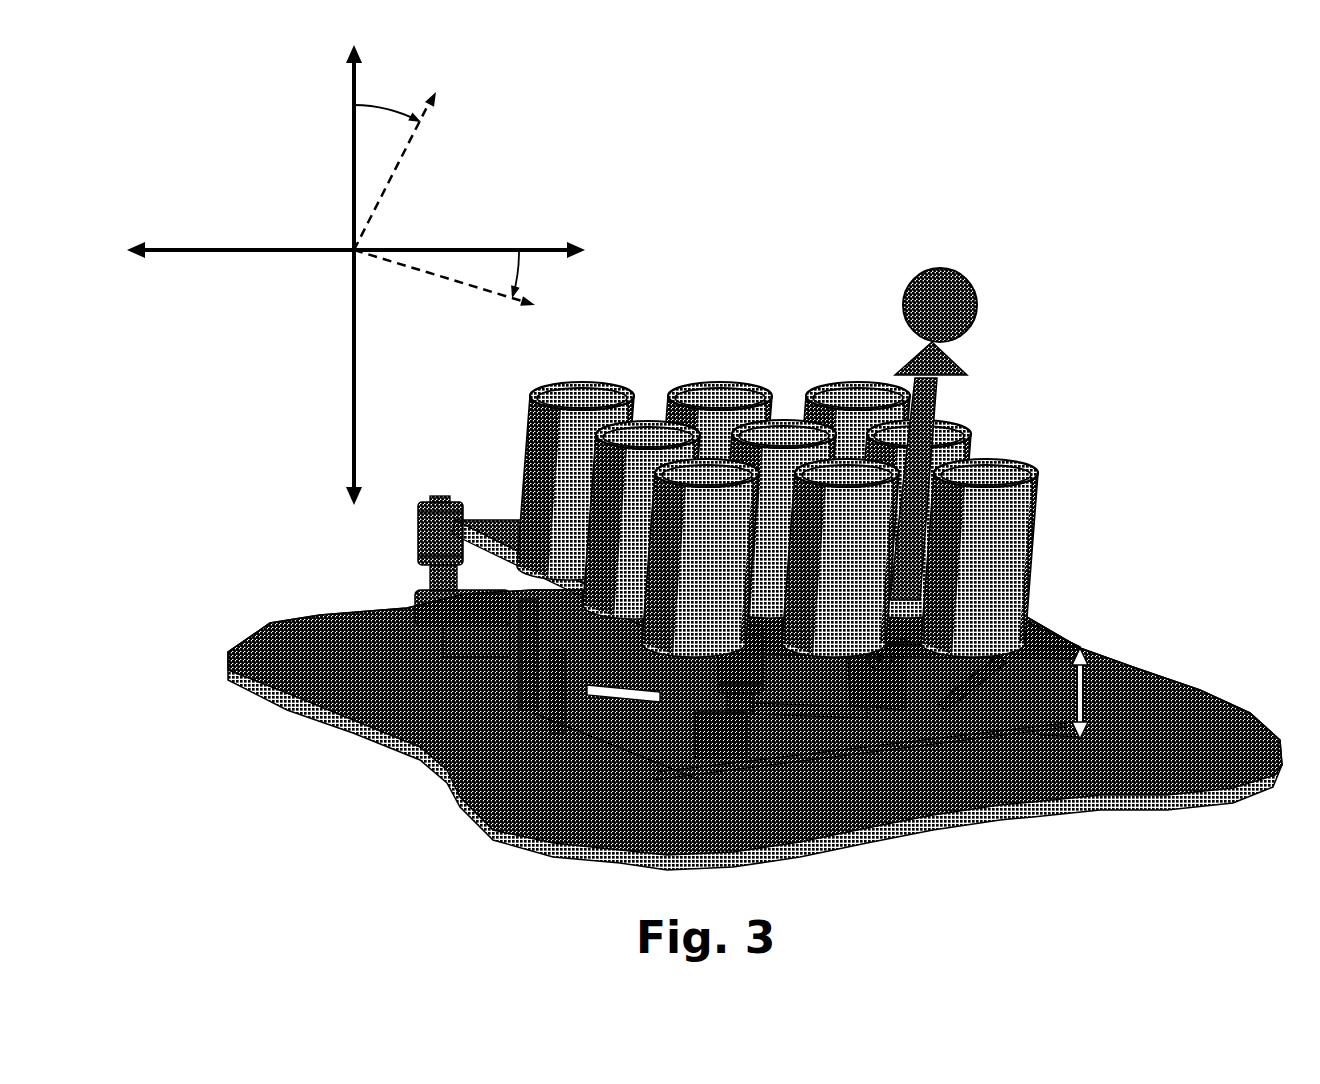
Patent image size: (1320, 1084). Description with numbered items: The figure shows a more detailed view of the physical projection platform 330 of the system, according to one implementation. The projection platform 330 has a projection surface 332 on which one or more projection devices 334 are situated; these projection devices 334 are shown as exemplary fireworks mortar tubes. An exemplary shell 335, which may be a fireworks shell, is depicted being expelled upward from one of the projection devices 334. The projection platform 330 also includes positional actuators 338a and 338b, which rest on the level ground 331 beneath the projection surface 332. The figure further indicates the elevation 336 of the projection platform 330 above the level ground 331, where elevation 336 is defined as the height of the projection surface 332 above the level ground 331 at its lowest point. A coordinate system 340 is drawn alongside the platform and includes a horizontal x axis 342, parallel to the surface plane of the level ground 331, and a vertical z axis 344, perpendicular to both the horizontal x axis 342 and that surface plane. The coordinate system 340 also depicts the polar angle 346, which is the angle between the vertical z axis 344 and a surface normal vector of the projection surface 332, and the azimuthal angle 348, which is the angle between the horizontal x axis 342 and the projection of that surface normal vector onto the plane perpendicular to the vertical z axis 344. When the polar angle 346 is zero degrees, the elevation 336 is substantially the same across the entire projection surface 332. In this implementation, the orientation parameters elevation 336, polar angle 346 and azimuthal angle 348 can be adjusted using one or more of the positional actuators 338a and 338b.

The physical projection platform 330 is at (1068, 410).
The level ground 331 is at (1200, 750).
The projection surface 332 is at (1026, 620).
The projection devices 334 is at (811, 462).
The shell 335 is at (903, 300).
The elevation 336 is at (1086, 694).
The positional actuator 338a is at (782, 740).
The positional actuator 338b is at (488, 628).
The coordinate system 340 is at (248, 140).
The horizontal x axis 342 is at (206, 257).
The vertical z axis 344 is at (353, 365).
The polar angle 346 is at (402, 162).
The azimuthal angle 348 is at (443, 280).